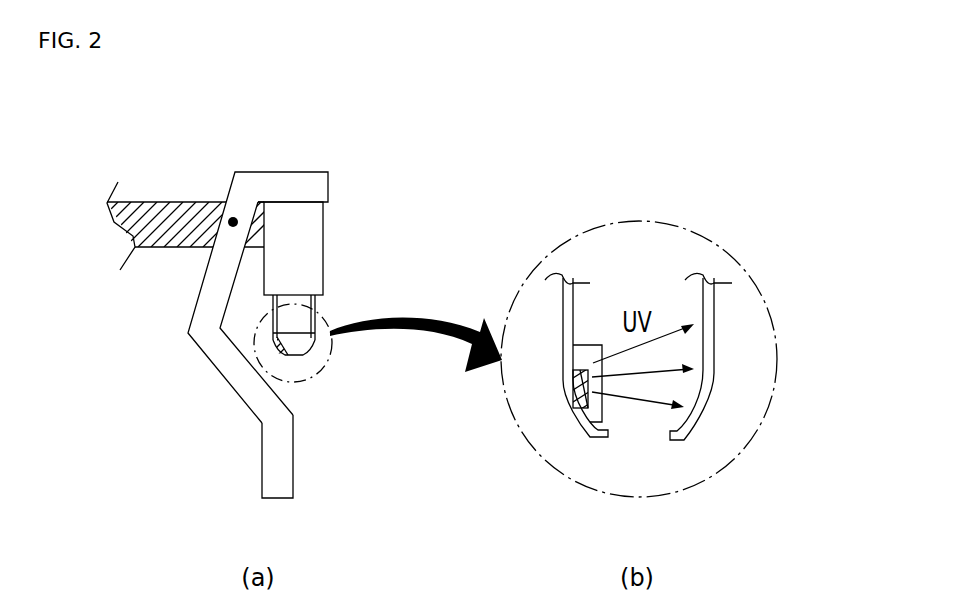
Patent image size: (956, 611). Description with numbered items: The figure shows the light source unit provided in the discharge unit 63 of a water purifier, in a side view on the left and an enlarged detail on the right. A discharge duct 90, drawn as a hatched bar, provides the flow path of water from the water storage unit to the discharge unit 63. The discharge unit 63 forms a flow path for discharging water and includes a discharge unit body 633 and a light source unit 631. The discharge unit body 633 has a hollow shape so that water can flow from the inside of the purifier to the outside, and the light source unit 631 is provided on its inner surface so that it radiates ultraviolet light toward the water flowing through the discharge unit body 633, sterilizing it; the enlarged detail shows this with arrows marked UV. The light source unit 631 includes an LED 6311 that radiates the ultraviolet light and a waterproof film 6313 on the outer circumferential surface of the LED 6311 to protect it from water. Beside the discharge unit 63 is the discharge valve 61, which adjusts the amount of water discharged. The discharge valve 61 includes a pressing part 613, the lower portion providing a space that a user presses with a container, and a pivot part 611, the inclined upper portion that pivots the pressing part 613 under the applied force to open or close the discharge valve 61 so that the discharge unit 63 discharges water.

The discharge duct 90 is at (178, 210).
The discharge valve 61 is at (192, 335).
The pivot part 611 is at (230, 223).
The pressing part 613 is at (280, 458).
The discharge unit 63 is at (547, 352).
The discharge unit body 633 is at (300, 217).
The light source unit 631 is at (433, 384).
The LED 6311 is at (577, 387).
The waterproof film 6313 is at (595, 417).